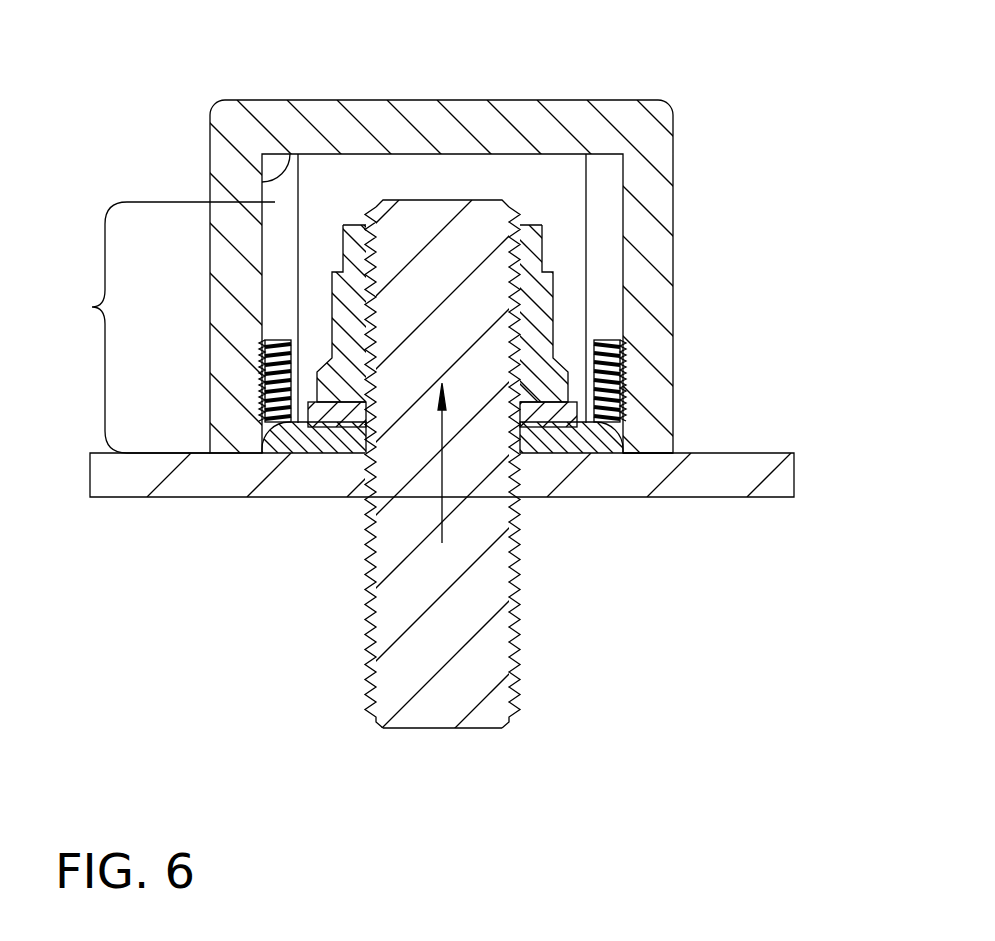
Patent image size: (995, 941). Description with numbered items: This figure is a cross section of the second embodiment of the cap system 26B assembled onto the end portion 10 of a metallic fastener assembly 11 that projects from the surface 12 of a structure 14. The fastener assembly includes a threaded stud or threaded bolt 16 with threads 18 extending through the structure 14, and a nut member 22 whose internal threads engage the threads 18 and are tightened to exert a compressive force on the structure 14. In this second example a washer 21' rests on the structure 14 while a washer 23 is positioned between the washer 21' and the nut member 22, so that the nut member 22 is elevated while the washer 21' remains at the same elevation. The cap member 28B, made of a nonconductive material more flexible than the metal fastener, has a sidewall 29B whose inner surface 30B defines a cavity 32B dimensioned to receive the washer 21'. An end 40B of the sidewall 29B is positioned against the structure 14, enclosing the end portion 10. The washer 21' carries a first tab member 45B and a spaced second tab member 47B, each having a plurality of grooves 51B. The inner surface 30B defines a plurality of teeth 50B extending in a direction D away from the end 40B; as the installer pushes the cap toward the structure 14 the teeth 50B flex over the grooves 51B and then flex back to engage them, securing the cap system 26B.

The end portion 10 is at (92, 307).
The metallic fastener assembly 11 is at (362, 550).
The surface 12 is at (752, 453).
The structure 14 is at (762, 475).
The threaded stud or threaded bolt 16 is at (445, 685).
The threads 18 is at (515, 570).
The washer 21' is at (436, 478).
The nut member 22 is at (537, 288).
The washer 23 is at (540, 412).
The cap system 26B is at (497, 230).
The cap member 28B is at (420, 120).
The sidewall 29B is at (240, 183).
The inner surface 30B is at (273, 140).
The cavity 32B is at (371, 177).
The end 40B is at (638, 470).
The first tab member 45B is at (637, 415).
The second tab member 47B is at (263, 378).
The plurality of teeth 50B is at (263, 398).
The plurality of grooves 51B is at (286, 337).
The direction D is at (442, 448).